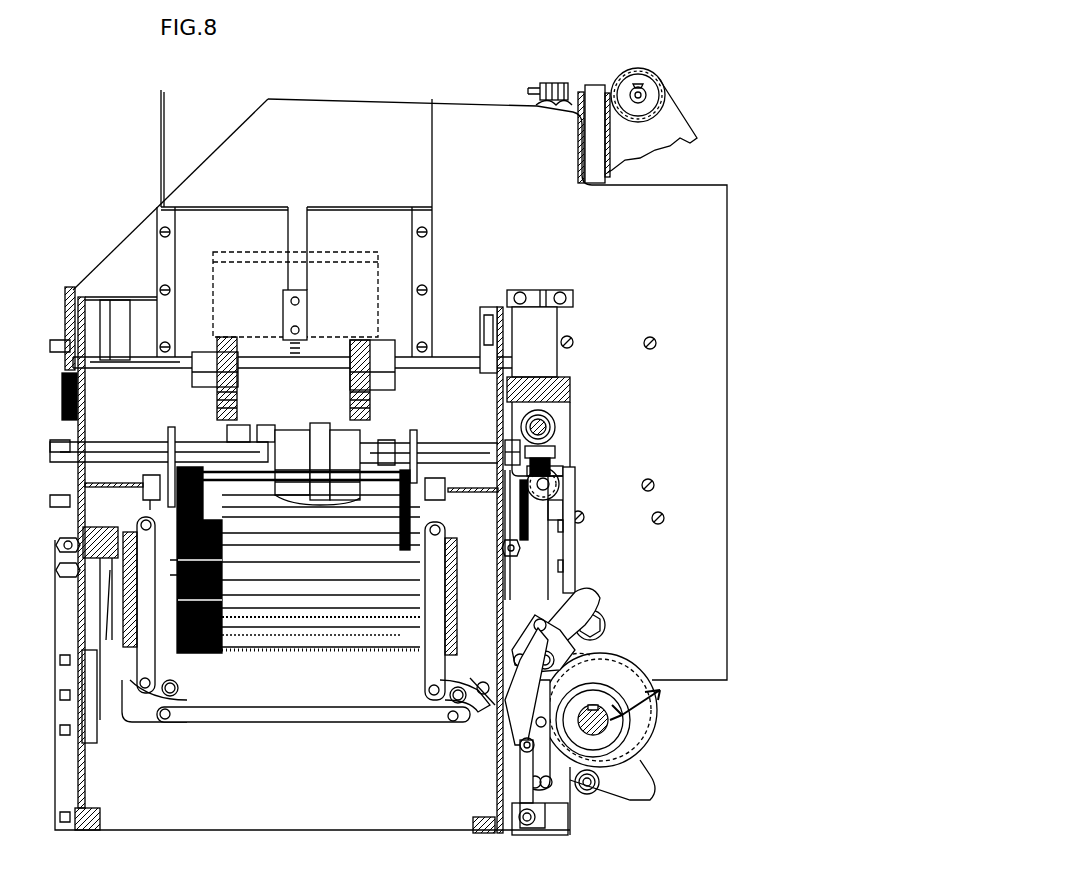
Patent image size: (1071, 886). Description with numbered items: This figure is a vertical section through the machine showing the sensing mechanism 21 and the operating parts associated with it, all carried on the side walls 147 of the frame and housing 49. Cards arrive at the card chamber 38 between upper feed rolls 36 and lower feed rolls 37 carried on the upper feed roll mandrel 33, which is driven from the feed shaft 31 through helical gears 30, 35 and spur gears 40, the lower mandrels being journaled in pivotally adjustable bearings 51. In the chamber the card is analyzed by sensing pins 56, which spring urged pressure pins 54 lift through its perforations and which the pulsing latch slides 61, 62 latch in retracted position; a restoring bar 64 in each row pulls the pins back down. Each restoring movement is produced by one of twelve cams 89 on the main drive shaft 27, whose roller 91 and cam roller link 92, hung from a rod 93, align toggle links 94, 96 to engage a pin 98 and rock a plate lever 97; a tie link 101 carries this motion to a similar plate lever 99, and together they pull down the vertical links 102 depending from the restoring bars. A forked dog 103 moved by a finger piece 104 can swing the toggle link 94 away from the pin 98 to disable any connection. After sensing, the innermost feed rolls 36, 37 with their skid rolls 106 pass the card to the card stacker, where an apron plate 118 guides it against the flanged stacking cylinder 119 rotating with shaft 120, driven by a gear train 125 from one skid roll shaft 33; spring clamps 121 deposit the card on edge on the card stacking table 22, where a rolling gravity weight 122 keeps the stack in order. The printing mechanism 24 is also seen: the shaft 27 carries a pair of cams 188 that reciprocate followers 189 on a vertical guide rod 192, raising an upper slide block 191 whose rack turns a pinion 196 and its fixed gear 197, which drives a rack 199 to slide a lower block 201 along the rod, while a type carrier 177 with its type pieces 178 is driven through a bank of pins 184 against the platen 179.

The sensing mechanism 21 is at (320, 583).
The card stacking table 22 is at (343, 222).
The printing mechanism 24 is at (707, 147).
The main drive shaft 27 is at (600, 727).
The helical gear 30 is at (556, 432).
The feed shaft 31 is at (553, 420).
The upper feed roll mandrel 33 is at (131, 452).
The helical gear 35 is at (560, 448).
The upper feed roll 36 is at (318, 437).
The lower feed roll 37 is at (318, 497).
The card chamber 38 is at (385, 455).
The spur gears 40 is at (520, 428).
The housing 49 is at (510, 332).
The bearings 51 is at (65, 540).
The pressure pins 54 is at (222, 636).
The sensing pins 56 is at (203, 497).
The upper pulsing latch slide 61 is at (164, 568).
The lower pulsing latch slide 62 is at (216, 580).
The restoring bar 64 is at (252, 540).
The cams 89 is at (648, 655).
The roller 91 is at (565, 680).
The cam roller link 92 is at (552, 696).
The rod 93 is at (590, 636).
The toggle link 94 is at (512, 700).
The toggle link 96 is at (525, 760).
The plate lever 97 is at (470, 700).
The pin 98 is at (483, 684).
The plate lever 99 is at (165, 697).
The tie link 101 is at (250, 715).
The vertical links 102 is at (145, 657).
The forked dog 103 is at (510, 640).
The finger piece 104 is at (580, 600).
The skid rolls 106 is at (400, 522).
The apron plate 118 is at (168, 390).
The stacking cylinder 119 is at (355, 362).
The shaft 120 is at (128, 357).
The spring clamps 121 is at (237, 406).
The gravity weight 122 is at (297, 268).
The gear train 125 is at (63, 378).
The side walls 147 is at (540, 243).
The type carrier 177 is at (593, 166).
The type pieces 178 is at (584, 92).
The platen 179 is at (660, 84).
The bank of pins 184 is at (553, 81).
The cams 188 is at (645, 712).
The followers 189 is at (610, 640).
The upper slide block 191 is at (548, 368).
The vertical guide rod 192 is at (570, 510).
The pinion 196 is at (560, 485).
The gear 197 is at (565, 472).
The rack 199 is at (570, 548).
The lower block 201 is at (550, 540).